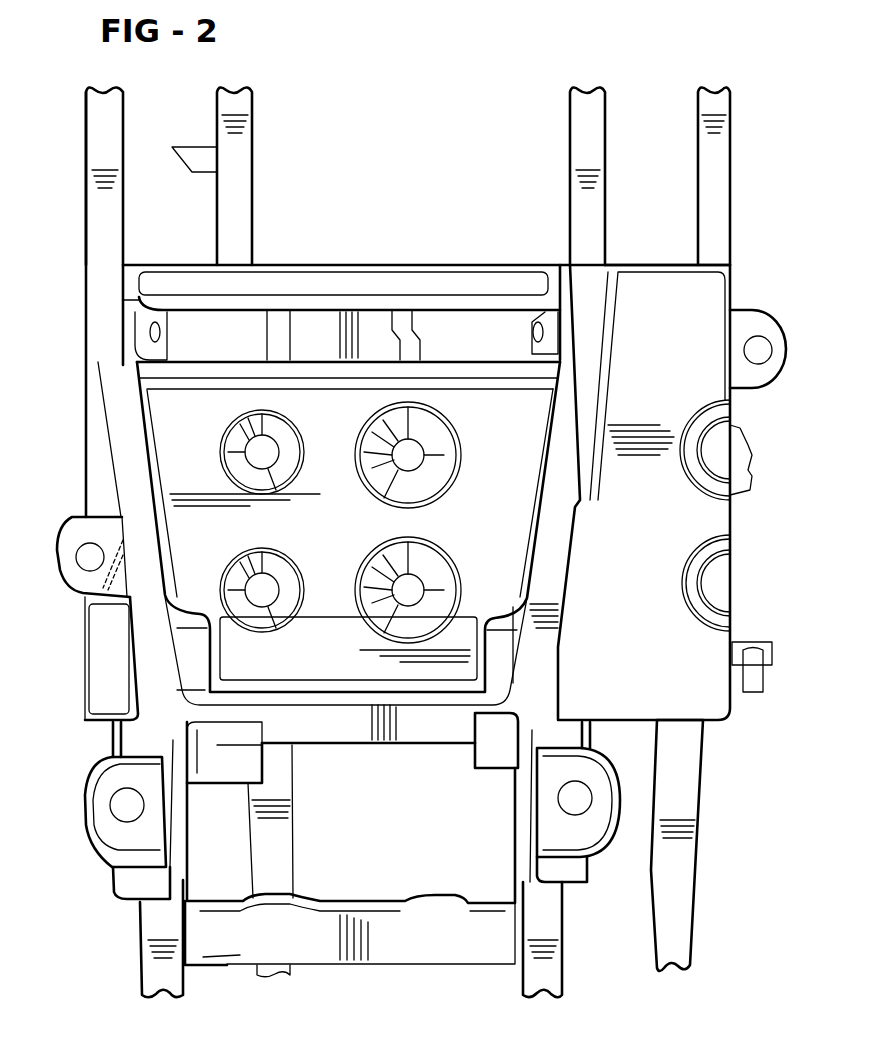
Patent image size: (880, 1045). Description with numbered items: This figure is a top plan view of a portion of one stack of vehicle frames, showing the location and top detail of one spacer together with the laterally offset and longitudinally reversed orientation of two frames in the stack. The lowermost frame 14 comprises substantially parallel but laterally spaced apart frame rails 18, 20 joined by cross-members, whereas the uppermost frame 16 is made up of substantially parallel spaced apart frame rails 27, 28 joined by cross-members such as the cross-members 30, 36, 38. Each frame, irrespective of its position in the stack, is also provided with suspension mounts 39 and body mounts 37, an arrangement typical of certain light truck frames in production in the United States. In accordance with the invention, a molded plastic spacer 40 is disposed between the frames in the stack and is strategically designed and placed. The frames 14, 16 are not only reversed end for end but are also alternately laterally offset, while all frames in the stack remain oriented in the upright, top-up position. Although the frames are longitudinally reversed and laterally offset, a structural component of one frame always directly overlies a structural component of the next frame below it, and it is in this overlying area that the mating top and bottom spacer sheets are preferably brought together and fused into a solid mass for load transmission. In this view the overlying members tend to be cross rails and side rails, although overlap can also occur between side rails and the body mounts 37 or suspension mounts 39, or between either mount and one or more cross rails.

The lowermost frame 14 is at (735, 186).
The uppermost frame 16 is at (602, 376).
The frame rail 18 is at (703, 810).
The frame rail 20 is at (252, 185).
The frame rail 27 is at (570, 190).
The frame rail 28 is at (86, 222).
The cross-member 30 is at (778, 312).
The cross-member 36 is at (345, 746).
The body mount 37 is at (65, 538).
The cross-member 38 is at (317, 923).
The suspension mount 39 is at (88, 800).
The molded plastic spacer 40 is at (732, 522).